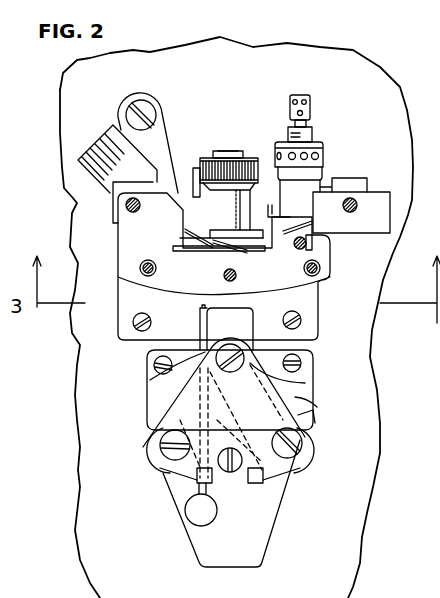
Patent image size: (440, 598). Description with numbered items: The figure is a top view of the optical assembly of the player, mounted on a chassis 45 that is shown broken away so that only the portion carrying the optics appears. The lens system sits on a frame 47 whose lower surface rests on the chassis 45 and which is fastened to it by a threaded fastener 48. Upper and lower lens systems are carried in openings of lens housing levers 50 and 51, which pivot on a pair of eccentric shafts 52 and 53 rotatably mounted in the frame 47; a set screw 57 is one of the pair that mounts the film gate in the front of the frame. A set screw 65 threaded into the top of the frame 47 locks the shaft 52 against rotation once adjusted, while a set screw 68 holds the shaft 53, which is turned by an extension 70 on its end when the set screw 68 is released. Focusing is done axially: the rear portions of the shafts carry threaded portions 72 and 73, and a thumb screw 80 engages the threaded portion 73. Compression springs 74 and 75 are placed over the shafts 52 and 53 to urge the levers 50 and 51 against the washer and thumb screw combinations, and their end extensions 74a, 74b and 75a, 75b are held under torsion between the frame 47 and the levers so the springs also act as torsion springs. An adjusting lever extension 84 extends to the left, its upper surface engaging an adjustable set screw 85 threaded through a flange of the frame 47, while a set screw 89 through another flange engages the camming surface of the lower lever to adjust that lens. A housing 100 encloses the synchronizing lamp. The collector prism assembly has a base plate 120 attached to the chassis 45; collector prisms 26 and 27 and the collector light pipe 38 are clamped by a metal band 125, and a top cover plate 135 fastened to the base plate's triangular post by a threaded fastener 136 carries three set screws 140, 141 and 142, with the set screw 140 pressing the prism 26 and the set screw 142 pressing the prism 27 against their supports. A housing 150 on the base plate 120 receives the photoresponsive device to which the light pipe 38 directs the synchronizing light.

The collector prism 26 is at (310, 463).
The collector prism 27 is at (152, 465).
The collector light pipe 38 is at (150, 380).
The chassis 45 is at (77, 450).
The frame 47 is at (388, 197).
The threaded fastener 48 is at (137, 100).
The lens housing lever 50 is at (206, 172).
The lens housing lever 51 is at (325, 180).
The eccentric shaft 52 is at (223, 243).
The eccentric shaft 53 is at (292, 246).
The set screw 57 is at (140, 270).
The set screw 65 is at (200, 293).
The set screw 68 is at (319, 259).
The extension 70 is at (308, 95).
The threaded portion 72 is at (222, 147).
The threaded portion 73 is at (308, 131).
The compression spring 74 is at (186, 229).
The end extension 74a is at (173, 246).
The end extension 74b is at (243, 249).
The compression spring 75 is at (312, 222).
The end extension 75a is at (315, 245).
The end extension 75b is at (268, 203).
The thumb screw 80 is at (322, 147).
The adjusting lever extension 84 is at (78, 202).
The set screw 85 is at (127, 209).
The set screw 89 is at (357, 198).
The housing 100 is at (90, 148).
The base plate 120 is at (268, 540).
The metal band 125 is at (253, 331).
The top cover plate 135 is at (297, 401).
The threaded fastener 136 is at (238, 480).
The set screw 140 is at (163, 437).
The set screw 141 is at (292, 382).
The set screw 142 is at (297, 442).
The housing 150 is at (185, 515).